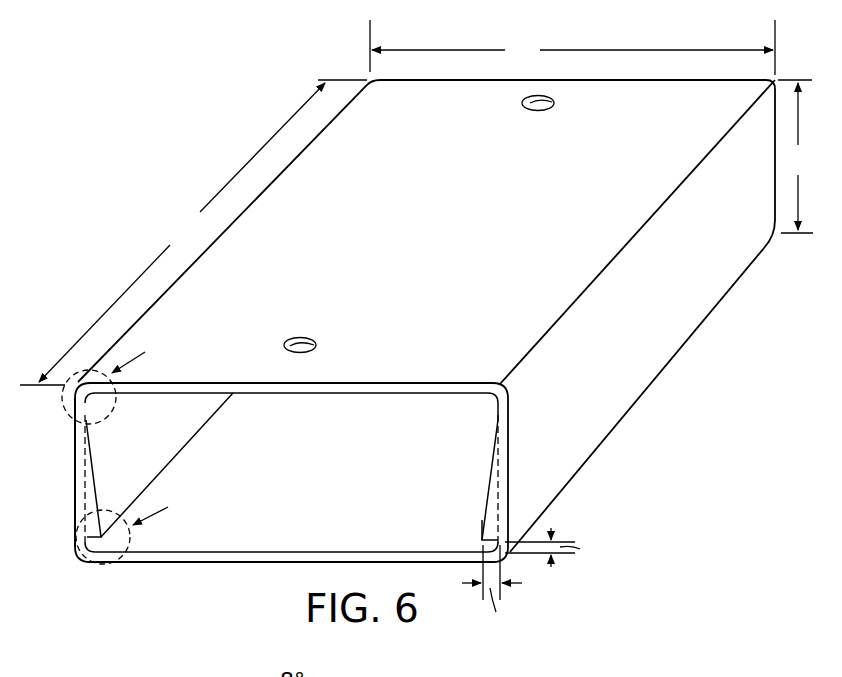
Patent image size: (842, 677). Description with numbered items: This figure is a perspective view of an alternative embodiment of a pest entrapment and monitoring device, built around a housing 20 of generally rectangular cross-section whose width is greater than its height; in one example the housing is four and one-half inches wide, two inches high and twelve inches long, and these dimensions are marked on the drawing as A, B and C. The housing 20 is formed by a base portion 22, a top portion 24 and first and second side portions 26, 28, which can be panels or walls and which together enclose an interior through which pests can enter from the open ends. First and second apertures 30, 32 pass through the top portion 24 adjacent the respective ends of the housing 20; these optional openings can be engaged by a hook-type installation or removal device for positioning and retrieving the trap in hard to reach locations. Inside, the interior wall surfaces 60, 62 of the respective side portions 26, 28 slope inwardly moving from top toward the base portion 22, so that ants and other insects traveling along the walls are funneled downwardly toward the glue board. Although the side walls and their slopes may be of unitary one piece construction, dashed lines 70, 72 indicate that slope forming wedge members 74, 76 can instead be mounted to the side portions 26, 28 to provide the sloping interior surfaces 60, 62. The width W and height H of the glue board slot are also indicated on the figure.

The housing 20 is at (415, 331).
The base portion 22 is at (267, 538).
The top portion 24 is at (603, 231).
The first side portion 26 is at (627, 370).
The second side portion 28 is at (75, 455).
The first aperture 30 is at (310, 338).
The second aperture 32 is at (551, 99).
The interior wall surface 60 is at (489, 462).
The interior wall surface 62 is at (170, 427).
The dashed line 70 is at (497, 489).
The dashed line 72 is at (90, 473).
The slope forming wedge member 74 is at (487, 515).
The slope forming wedge member 76 is at (90, 497).